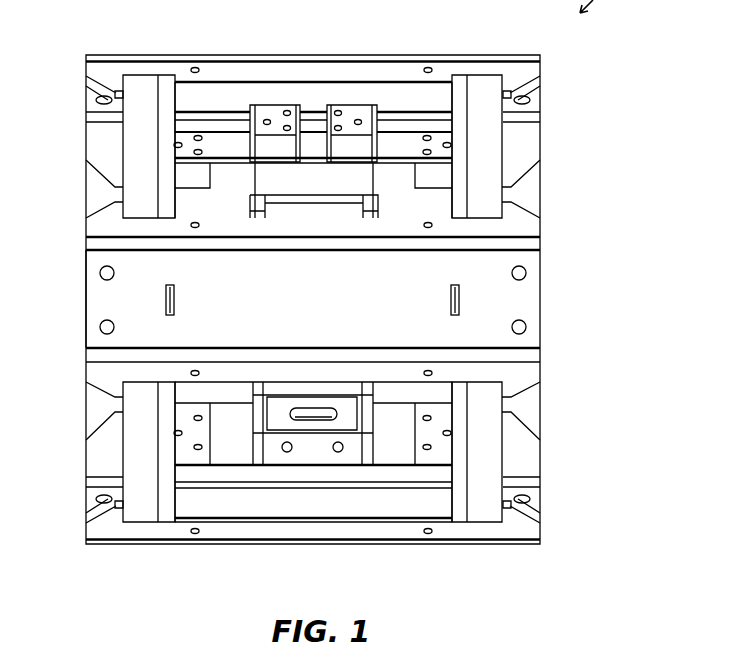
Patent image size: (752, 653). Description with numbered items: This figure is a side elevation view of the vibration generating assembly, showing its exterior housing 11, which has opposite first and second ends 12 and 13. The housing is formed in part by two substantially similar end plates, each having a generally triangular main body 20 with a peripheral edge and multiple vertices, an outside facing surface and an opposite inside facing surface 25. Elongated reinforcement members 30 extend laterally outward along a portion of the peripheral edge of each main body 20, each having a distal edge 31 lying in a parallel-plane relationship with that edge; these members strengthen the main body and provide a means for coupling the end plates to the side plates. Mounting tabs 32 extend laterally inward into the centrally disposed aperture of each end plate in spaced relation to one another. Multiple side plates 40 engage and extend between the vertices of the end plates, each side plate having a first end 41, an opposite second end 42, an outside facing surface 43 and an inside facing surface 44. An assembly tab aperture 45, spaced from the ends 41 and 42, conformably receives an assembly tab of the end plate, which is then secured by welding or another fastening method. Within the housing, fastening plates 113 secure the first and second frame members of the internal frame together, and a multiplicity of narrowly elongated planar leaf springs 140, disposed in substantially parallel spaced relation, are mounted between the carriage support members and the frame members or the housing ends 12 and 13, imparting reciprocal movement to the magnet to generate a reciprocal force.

The exterior housing 11 is at (525, 297).
The first end 12 is at (86, 318).
The second end 13 is at (540, 355).
The main body 20 is at (460, 193).
The inside facing surface 25 is at (450, 197).
The reinforcement member 30 is at (135, 167).
The distal edge 31 is at (133, 138).
The mounting tab 32 is at (175, 300).
The side plate 40 is at (291, 54).
The first end 41 is at (92, 272).
The second end 42 is at (542, 267).
The outside facing surface 43 is at (260, 545).
The inside facing surface 44 is at (383, 95).
The assembly tab aperture 45 is at (167, 302).
The fastening plate 113 is at (337, 418).
The leaf spring 140 is at (252, 175).